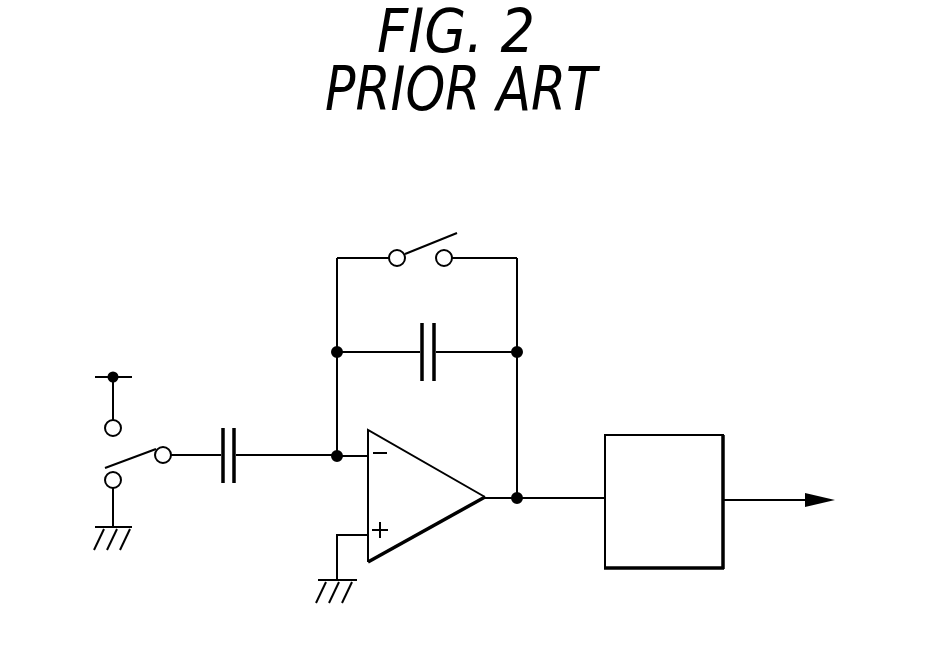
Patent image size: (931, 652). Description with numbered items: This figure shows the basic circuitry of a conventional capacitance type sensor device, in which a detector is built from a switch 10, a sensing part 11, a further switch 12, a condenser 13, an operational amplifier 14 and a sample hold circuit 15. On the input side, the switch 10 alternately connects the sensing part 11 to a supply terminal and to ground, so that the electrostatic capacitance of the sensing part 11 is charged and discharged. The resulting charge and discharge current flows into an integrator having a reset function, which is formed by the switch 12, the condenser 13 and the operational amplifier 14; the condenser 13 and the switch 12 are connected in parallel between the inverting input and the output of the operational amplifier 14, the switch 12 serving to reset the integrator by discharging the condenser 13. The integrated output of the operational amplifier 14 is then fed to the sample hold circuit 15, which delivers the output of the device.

The switch 10 is at (137, 461).
The sensing part 11 is at (232, 447).
The switch 12 is at (440, 238).
The condenser 13 is at (435, 333).
The operational amplifier 14 is at (412, 503).
The sample hold circuit 15 is at (682, 447).